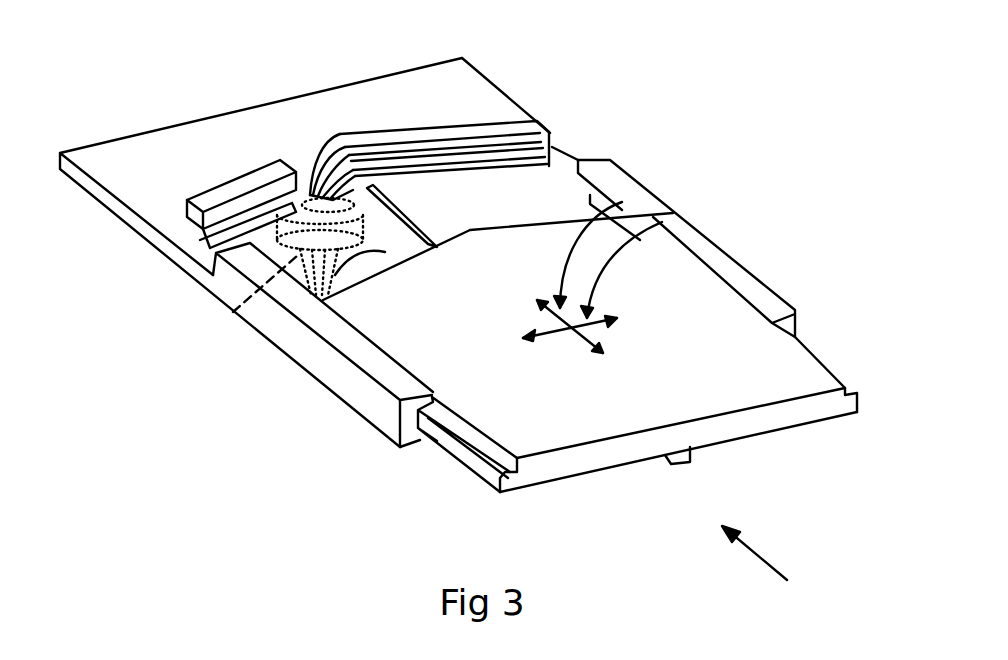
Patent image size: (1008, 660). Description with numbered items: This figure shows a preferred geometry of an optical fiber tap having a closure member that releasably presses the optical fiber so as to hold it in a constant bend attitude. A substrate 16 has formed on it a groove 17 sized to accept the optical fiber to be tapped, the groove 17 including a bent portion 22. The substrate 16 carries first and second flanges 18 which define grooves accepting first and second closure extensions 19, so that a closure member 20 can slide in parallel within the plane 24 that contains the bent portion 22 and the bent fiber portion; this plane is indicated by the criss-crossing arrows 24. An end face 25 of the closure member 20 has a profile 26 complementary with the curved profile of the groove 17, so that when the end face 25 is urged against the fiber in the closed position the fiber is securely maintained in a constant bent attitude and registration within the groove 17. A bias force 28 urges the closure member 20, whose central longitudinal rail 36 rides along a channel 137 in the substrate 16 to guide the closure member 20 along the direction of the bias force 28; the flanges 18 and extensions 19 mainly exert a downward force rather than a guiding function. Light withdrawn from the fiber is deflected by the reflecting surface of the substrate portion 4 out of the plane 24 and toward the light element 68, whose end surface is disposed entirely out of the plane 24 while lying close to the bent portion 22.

The substrate portion 4 is at (313, 190).
The substrate 16 is at (93, 187).
The groove 17 is at (553, 147).
The flanges 18 is at (623, 200).
The closure extensions 19 is at (844, 388).
The closure member 20 is at (727, 333).
The bent portion 22 is at (403, 210).
The plane 24 is at (673, 213).
The end face 25 is at (327, 300).
The profile 26 is at (540, 213).
The bias force 28 is at (757, 556).
The central longitudinal rail 36 is at (693, 455).
The light element 68 is at (230, 310).
The channel 137 is at (462, 58).